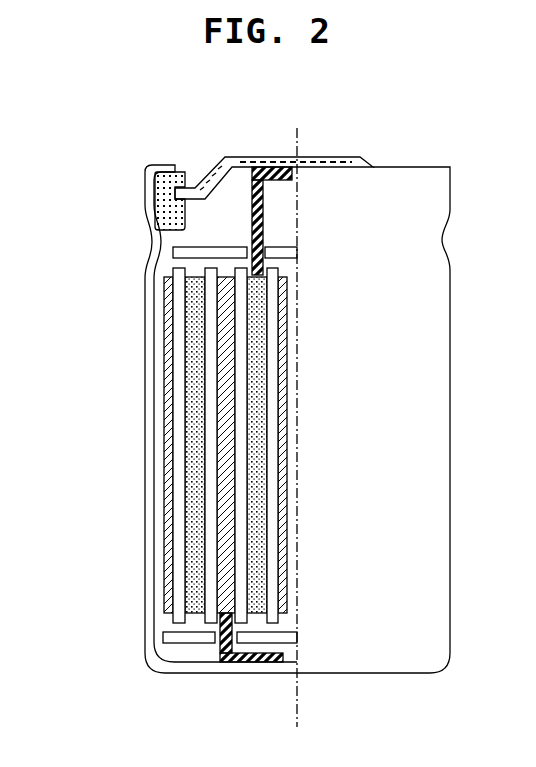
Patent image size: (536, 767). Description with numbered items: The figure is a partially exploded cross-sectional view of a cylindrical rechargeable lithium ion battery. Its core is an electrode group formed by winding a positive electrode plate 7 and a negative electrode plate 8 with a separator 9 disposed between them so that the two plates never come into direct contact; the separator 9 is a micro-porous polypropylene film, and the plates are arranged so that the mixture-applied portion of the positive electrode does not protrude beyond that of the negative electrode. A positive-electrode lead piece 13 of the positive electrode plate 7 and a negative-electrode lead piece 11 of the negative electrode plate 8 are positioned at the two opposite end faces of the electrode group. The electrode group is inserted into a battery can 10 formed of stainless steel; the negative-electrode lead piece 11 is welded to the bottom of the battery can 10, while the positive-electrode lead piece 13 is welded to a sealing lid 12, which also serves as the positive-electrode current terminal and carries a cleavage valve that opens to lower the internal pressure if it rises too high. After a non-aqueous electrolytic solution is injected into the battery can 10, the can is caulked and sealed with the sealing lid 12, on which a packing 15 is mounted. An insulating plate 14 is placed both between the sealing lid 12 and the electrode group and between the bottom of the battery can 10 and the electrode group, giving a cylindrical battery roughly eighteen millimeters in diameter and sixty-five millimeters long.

The positive electrode plate 7 is at (255, 613).
The negative electrode plate 8 is at (164, 523).
The separator 9 is at (177, 621).
The battery can 10 is at (145, 438).
The negative-electrode lead piece 11 is at (222, 653).
The sealing lid 12 is at (338, 158).
The positive-electrode lead piece 13 is at (252, 207).
The insulating plate 14 is at (175, 252).
The packing 15 is at (187, 185).